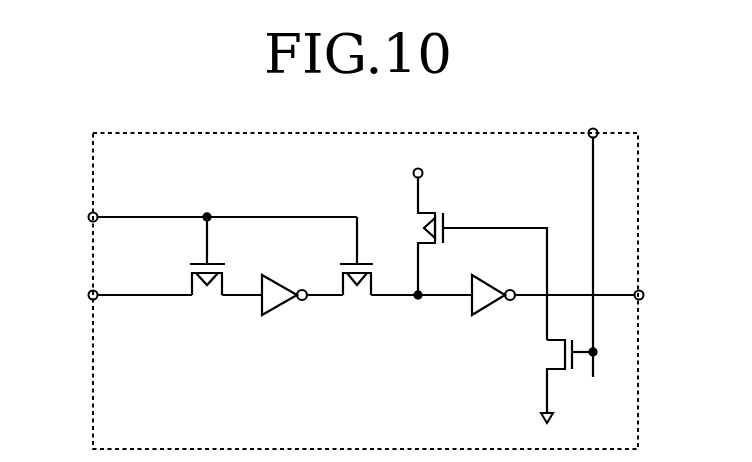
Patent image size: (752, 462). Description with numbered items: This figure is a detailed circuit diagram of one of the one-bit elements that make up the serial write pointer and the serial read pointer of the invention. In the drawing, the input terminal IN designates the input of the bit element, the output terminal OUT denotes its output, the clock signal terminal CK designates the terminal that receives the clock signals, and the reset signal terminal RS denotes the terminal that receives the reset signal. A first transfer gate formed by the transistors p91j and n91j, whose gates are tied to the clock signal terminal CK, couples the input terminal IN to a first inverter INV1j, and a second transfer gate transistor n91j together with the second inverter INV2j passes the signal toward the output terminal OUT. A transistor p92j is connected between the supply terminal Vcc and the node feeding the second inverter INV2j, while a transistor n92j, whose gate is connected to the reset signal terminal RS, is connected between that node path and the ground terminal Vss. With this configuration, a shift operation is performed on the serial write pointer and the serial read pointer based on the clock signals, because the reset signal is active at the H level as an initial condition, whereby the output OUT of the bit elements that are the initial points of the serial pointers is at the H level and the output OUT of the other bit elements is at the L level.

The p-channel MOS transfer gate transistor p91j is at (218, 288).
The first inverter INV1j is at (282, 307).
The n-channel MOS transfer gate transistor n91j is at (366, 288).
The p-channel MOS transistor p92j is at (446, 226).
The second inverter INV2j is at (488, 308).
The n-channel MOS reset transistor n92j is at (547, 366).
The clock signal terminal CK is at (88, 217).
The input terminal IN is at (88, 295).
The output terminal OUT is at (644, 297).
The reset signal terminal RS is at (592, 128).
The power supply terminal Vcc is at (420, 168).
The ground terminal Vss is at (542, 418).